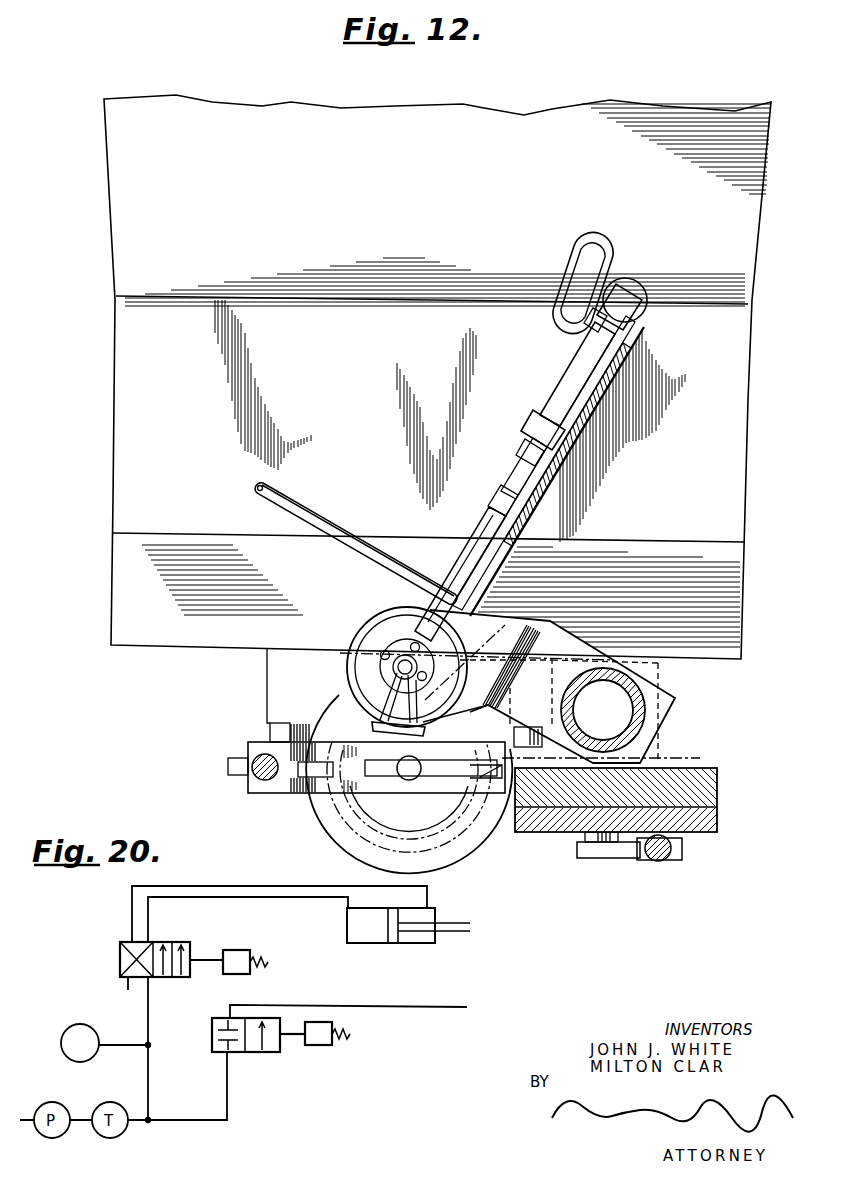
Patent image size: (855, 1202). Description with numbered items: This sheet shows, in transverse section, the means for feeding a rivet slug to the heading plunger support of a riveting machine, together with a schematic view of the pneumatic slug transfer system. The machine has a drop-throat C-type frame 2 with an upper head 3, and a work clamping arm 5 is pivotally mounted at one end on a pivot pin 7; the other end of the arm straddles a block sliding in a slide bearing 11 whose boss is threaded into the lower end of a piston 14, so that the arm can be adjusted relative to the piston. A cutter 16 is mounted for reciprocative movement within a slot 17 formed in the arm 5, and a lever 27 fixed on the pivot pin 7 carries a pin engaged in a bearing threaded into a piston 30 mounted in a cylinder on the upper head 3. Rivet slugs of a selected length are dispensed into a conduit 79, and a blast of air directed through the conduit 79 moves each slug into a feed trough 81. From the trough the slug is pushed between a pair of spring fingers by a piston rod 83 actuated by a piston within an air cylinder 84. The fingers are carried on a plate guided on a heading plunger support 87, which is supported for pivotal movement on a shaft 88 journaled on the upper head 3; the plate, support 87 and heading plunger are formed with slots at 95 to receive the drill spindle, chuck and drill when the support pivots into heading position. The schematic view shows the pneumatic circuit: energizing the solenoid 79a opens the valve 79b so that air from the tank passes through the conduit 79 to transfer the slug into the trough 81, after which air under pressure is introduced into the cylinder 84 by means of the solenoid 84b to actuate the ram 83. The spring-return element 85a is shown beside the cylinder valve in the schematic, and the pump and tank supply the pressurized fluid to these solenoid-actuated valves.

In FIG. 12, the frame 2 is at (112, 178).
In FIG. 12, the upper head 3 is at (123, 473).
In FIG. 12, the work clamping arm 5 is at (281, 794).
In FIG. 12, the pivot pin 7 is at (592, 850).
In FIG. 12, the slide bearing 11 is at (240, 776).
In FIG. 12, the piston 14 is at (263, 754).
In FIG. 12, the cutter 16 is at (438, 776).
In FIG. 12, the slot 17 is at (393, 776).
In FIG. 12, the lever 27 is at (634, 860).
In FIG. 12, the piston 30 is at (660, 862).
In FIG. 12, the conduit 79 is at (322, 524).
In FIG. 20, the conduit 79 is at (405, 1007).
In FIG. 12, the feed trough 81 is at (481, 538).
In FIG. 12, the piston rod 83 is at (518, 474).
In FIG. 20, the piston rod 83 is at (452, 926).
In FIG. 12, the air cylinder 84 is at (568, 381).
In FIG. 20, the air cylinder 84 is at (346, 925).
In FIG. 20, the solenoid 84b is at (182, 943).
In FIG. 20, the spring return 85a is at (247, 951).
In FIG. 12, the heading plunger support 87 is at (381, 614).
In FIG. 12, the shaft 88 is at (655, 712).
In FIG. 12, the slots 95 is at (382, 688).
In FIG. 20, the solenoid 79a is at (329, 1046).
In FIG. 20, the valve 79b is at (273, 1052).